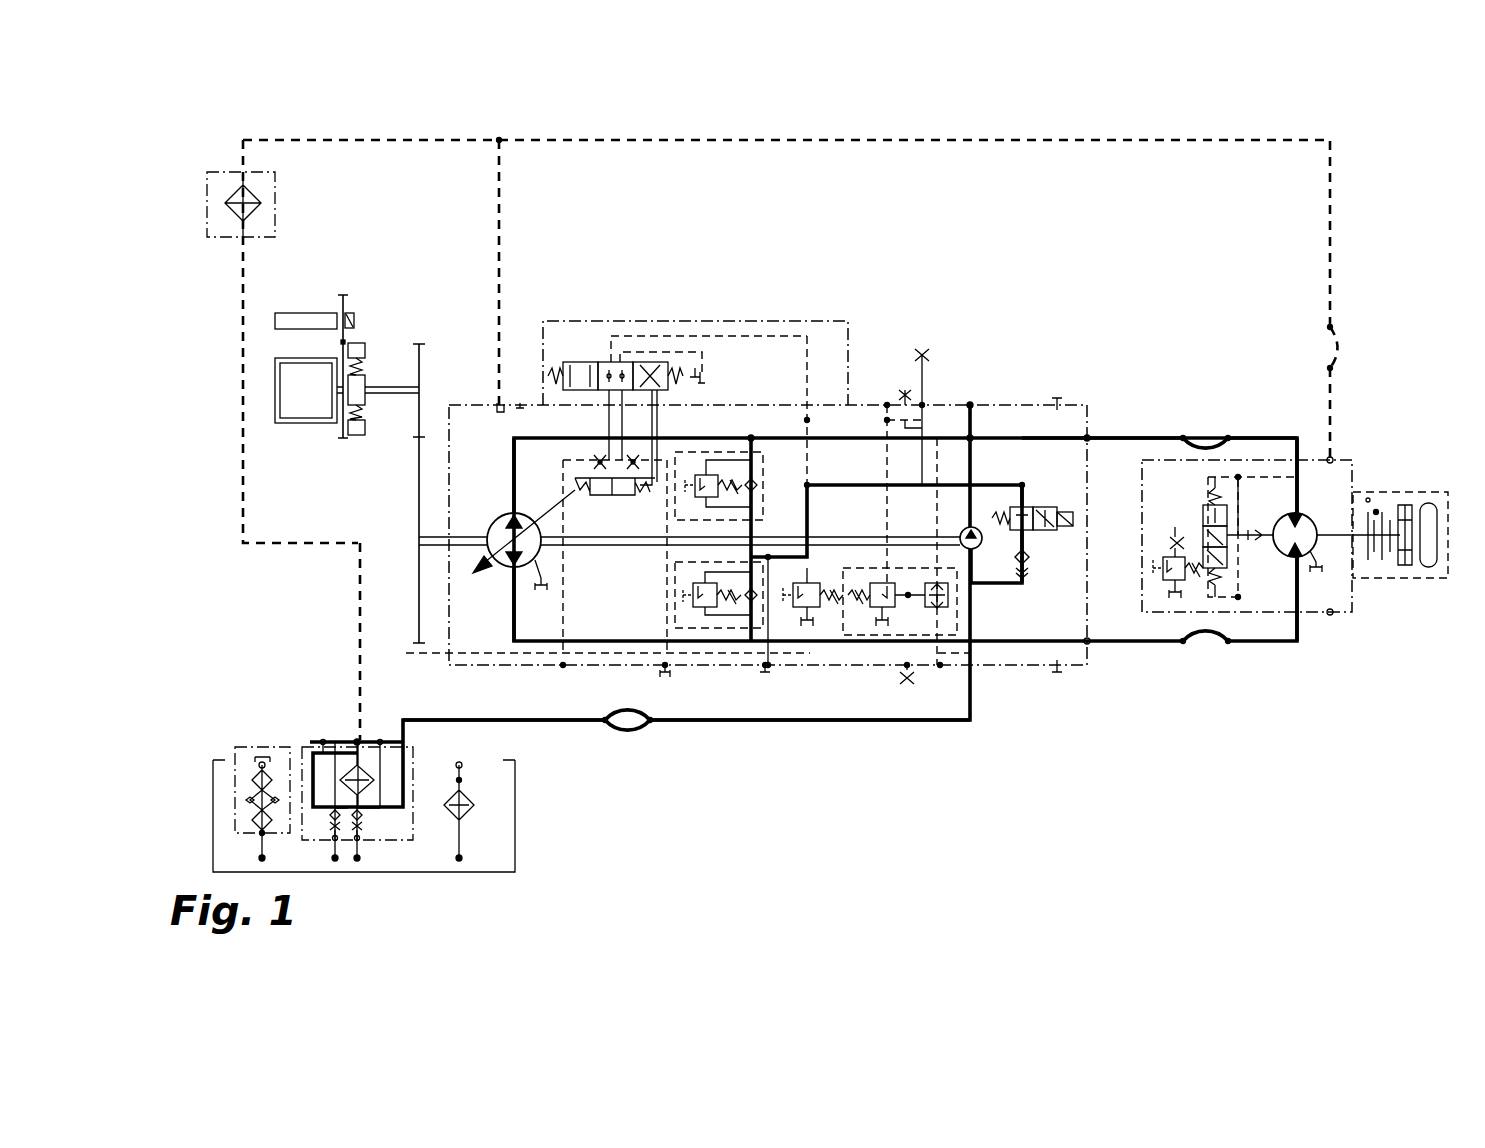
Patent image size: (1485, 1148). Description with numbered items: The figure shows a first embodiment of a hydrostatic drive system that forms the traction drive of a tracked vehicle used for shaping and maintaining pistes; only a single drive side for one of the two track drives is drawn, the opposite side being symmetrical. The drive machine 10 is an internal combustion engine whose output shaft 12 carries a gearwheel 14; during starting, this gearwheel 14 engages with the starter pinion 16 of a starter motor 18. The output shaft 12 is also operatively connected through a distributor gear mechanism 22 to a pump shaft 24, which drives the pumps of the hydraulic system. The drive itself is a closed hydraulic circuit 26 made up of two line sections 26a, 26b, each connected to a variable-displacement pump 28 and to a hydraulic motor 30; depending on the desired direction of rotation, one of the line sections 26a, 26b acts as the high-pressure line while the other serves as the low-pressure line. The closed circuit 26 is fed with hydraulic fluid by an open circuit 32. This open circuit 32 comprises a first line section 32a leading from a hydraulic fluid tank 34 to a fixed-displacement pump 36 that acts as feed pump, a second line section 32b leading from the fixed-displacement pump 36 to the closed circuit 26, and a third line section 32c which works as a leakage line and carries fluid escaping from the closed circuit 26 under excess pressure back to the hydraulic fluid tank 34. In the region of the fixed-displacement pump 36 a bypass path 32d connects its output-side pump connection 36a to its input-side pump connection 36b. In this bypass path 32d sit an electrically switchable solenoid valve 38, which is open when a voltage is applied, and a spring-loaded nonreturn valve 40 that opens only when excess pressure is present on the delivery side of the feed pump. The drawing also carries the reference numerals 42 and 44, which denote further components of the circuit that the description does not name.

The drive machine 10 is at (300, 378).
The output shaft 12 is at (412, 392).
The gearwheel 14 is at (348, 430).
The starter pinion 16 is at (340, 336).
The starter motor 18 is at (275, 321).
The distributor gear mechanism 22 is at (417, 514).
The pump shaft 24 is at (437, 543).
The closed hydraulic circuit 26 is at (1310, 622).
The line section 26a is at (1228, 641).
The line section 26b is at (1142, 462).
The variable-displacement pump 28 is at (516, 567).
The hydraulic motor 30 is at (1282, 558).
The open circuit 32 is at (822, 128).
The first line section 32a is at (772, 722).
The second line section 32b is at (812, 545).
The third line section 32c is at (660, 140).
The bypass path 32d is at (1025, 572).
The hydraulic fluid tank 34 is at (517, 803).
The fixed-displacement pump 36 is at (980, 550).
The output-side pump connection 36a is at (960, 533).
The input-side pump connection 36b is at (937, 575).
The solenoid valve 38 is at (1138, 438).
The spring-loaded nonreturn valve 40 is at (1058, 531).
The pressure relief valves 42 is at (751, 600).
The pedal position sensor 44 is at (345, 315).